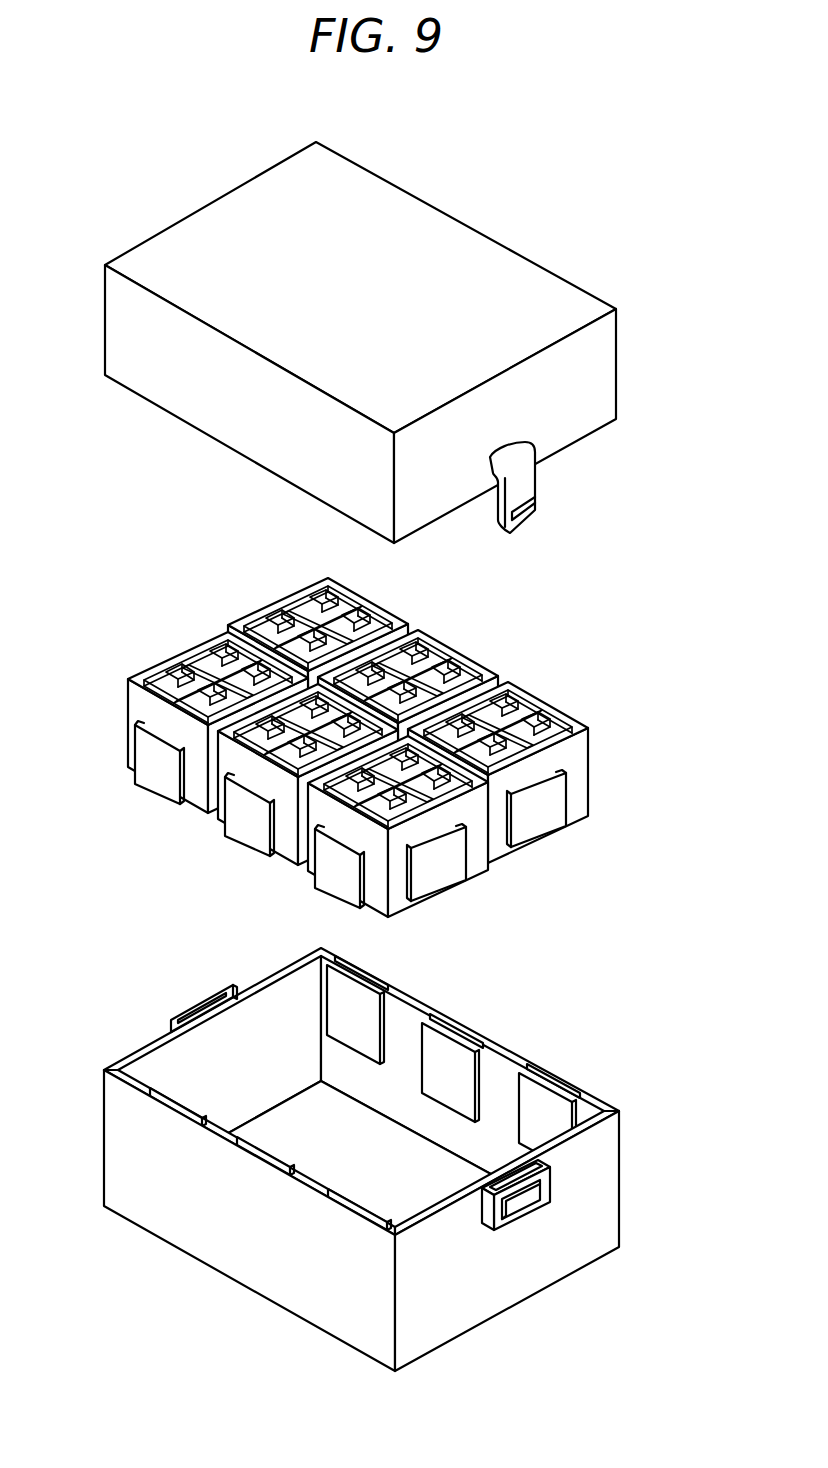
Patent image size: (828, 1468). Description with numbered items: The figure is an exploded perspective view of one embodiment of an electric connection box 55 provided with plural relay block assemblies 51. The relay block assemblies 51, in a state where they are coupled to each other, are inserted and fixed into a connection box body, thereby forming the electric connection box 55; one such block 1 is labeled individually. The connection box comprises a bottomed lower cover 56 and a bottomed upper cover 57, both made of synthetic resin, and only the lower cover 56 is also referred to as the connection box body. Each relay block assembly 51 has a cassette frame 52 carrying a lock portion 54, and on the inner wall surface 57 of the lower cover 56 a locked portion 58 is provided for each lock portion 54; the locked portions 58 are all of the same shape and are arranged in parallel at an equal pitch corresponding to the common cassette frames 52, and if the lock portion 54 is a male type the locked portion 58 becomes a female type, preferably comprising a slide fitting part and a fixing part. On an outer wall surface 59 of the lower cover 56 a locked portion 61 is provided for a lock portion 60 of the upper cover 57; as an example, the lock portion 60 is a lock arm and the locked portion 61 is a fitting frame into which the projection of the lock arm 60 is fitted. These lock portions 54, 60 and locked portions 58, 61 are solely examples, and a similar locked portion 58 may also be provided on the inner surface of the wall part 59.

The relay block 1 is at (184, 707).
The relay block assembly 51 is at (324, 734).
The cassette frame 52 is at (127, 680).
The lock portion 54 is at (150, 774).
The electric connection box 55 is at (376, 756).
The lower cover 56 is at (393, 1159).
The upper cover 57 is at (362, 610).
The locked portion 58 is at (344, 1023).
The outer wall surface 59 is at (601, 1146).
The lock portion 60 is at (527, 493).
The locked portion 61 is at (551, 1188).